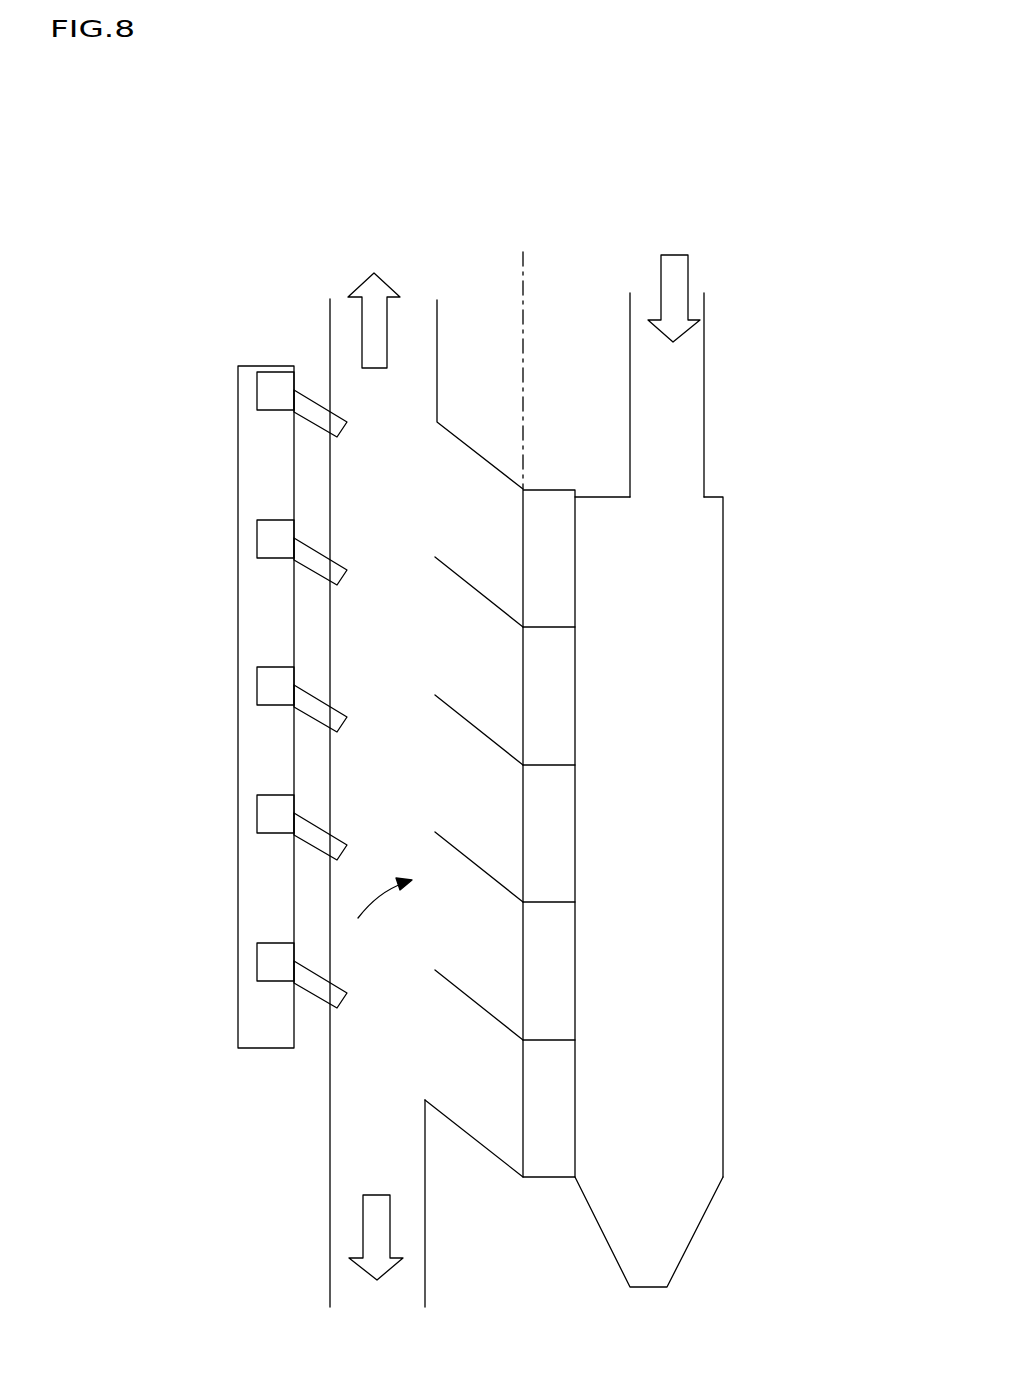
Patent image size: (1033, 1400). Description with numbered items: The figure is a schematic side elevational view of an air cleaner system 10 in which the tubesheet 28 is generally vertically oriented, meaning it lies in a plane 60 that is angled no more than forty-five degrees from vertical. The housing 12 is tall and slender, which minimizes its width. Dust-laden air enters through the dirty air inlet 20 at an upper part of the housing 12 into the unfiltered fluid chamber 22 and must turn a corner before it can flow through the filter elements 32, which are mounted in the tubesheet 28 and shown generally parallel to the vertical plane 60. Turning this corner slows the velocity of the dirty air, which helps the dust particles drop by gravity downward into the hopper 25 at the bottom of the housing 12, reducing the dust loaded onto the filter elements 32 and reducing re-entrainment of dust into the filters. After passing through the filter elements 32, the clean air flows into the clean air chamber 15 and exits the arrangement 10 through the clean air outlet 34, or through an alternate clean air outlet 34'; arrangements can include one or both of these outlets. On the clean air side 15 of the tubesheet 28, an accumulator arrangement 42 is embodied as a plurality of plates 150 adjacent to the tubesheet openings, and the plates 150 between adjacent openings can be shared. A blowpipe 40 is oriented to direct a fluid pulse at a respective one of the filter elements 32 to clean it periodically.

The air cleaner system 10 is at (778, 205).
The housing 12 is at (723, 852).
The clean air chamber 15 is at (456, 455).
The dirty air inlet 20 is at (700, 396).
The unfiltered fluid chamber 22 is at (712, 630).
The hopper 25 is at (684, 1244).
The tubesheet 28 is at (523, 512).
The filter elements 32 is at (566, 571).
The clean air outlet 34 is at (477, 370).
The alternate clean air outlet 34' is at (473, 1234).
The blowpipe 40 is at (340, 418).
The accumulator arrangement 42 is at (375, 914).
The plane 60 is at (523, 315).
The plates 150 is at (456, 572).